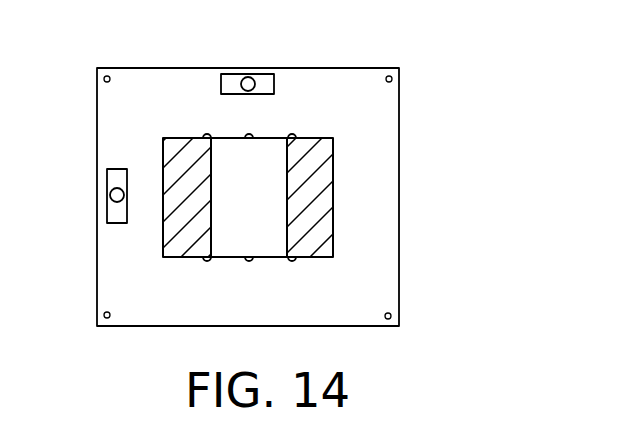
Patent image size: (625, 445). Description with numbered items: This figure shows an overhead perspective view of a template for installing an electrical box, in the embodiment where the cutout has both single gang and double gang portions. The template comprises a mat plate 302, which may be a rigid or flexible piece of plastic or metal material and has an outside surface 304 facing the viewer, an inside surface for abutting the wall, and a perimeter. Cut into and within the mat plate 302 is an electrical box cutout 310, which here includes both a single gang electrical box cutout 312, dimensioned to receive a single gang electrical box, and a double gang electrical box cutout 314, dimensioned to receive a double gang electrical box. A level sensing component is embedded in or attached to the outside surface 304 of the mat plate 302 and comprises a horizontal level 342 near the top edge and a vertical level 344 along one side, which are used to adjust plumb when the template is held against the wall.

The mat plate 302 is at (402, 255).
The outside surface 304 is at (178, 111).
The electrical box cutout 310 is at (264, 221).
The single gang electrical box cutout 312 is at (248, 202).
The double gang electrical box cutout 314 is at (307, 170).
The horizontal level 342 is at (237, 77).
The vertical level 344 is at (112, 193).